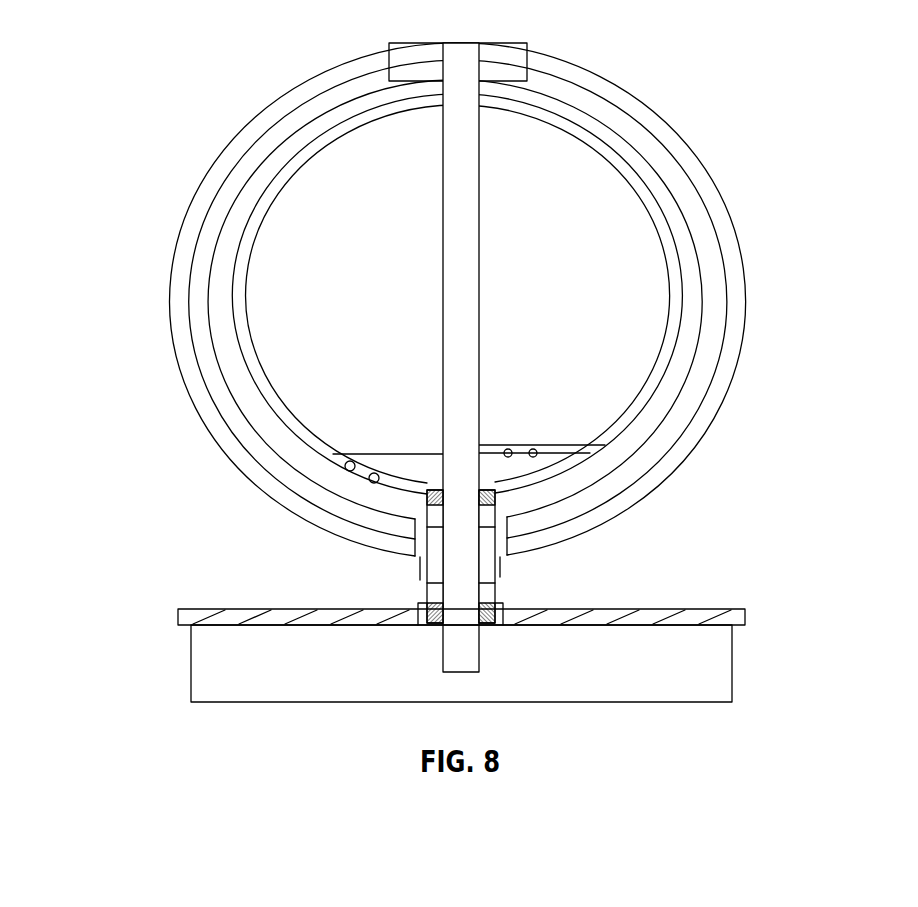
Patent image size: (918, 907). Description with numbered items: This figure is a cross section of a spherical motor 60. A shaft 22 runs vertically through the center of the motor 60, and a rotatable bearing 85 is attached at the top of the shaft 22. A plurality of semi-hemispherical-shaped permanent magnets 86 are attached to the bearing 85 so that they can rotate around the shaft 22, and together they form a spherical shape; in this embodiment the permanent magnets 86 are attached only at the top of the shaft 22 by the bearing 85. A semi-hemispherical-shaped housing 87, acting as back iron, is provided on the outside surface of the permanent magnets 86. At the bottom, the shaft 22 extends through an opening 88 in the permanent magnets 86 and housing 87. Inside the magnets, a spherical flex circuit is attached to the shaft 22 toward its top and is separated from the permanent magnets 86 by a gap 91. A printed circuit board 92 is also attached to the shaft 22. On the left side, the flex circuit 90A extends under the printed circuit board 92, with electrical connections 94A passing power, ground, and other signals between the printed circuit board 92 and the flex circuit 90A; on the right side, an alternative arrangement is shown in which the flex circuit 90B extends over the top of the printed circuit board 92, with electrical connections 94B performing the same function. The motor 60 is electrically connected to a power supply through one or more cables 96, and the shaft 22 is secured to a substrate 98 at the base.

The motor 60 is at (132, 307).
The shaft 22 is at (460, 238).
The rotatable bearing 85 is at (528, 69).
The permanent magnets 86 is at (335, 88).
The housing 87 is at (258, 118).
The opening 88 is at (420, 580).
The flex circuit 90A is at (257, 220).
The flex circuit 90B is at (657, 213).
The gap 91 is at (220, 287).
The printed circuit board 92 is at (407, 467).
The electrical connections 94A is at (370, 480).
The electrical connections 94B is at (533, 448).
The cables 96 is at (430, 597).
The substrate 98 is at (718, 682).